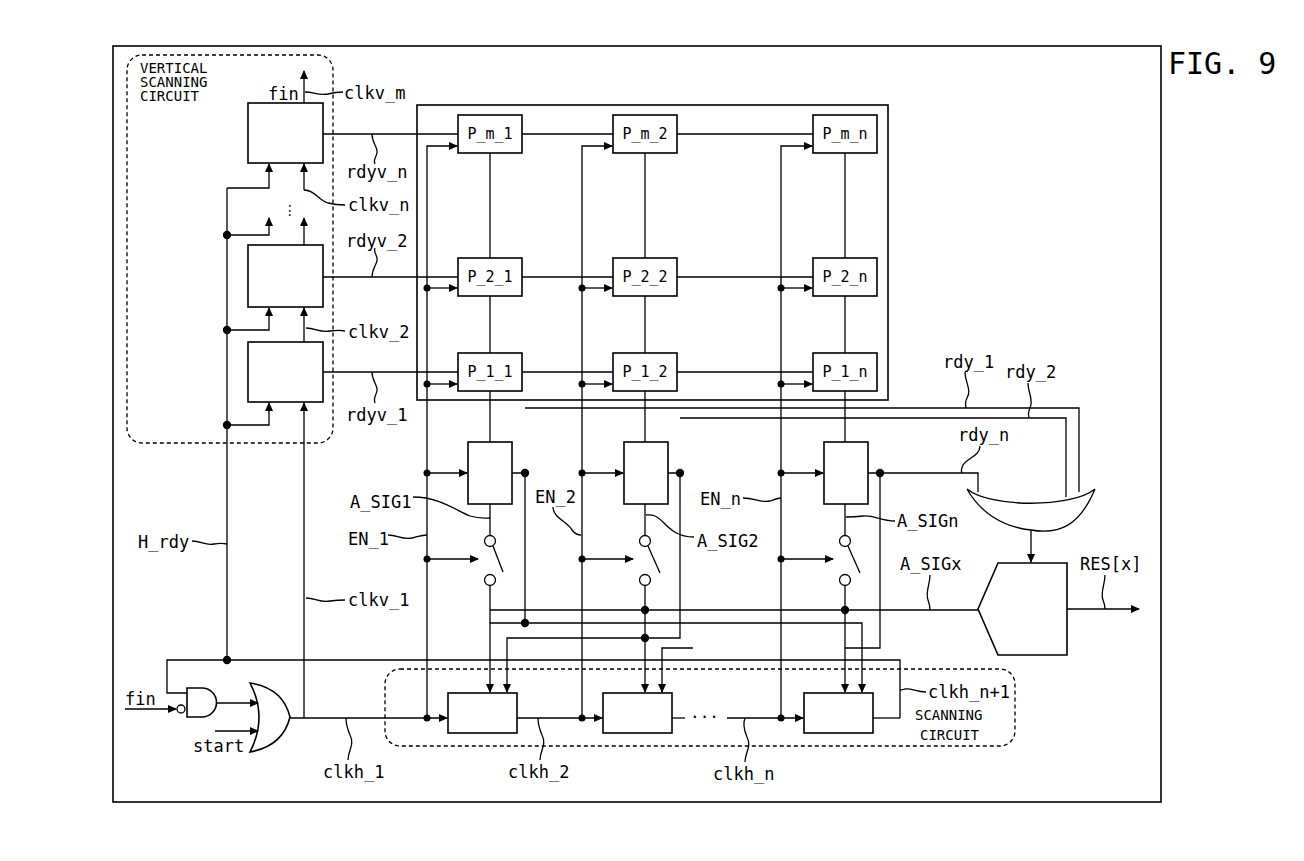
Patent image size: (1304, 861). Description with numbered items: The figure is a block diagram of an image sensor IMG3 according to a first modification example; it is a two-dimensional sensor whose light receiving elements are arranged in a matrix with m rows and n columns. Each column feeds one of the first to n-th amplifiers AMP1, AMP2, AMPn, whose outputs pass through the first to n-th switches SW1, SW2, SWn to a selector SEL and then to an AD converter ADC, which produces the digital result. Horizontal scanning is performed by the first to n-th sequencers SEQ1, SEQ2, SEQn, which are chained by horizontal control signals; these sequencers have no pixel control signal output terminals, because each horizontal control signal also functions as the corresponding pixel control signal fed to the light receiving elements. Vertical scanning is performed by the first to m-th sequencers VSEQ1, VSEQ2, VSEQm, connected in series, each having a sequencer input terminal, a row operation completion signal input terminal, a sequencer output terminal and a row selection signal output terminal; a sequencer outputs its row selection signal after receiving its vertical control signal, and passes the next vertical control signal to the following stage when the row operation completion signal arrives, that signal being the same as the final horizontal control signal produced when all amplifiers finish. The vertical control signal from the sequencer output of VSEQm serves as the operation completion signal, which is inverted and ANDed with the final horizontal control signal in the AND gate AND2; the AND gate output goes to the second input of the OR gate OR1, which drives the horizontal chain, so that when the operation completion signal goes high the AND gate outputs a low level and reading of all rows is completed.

The image sensor IMG3 is at (1162, 160).
The m-th sequencer VSEQm is at (248, 134).
The second sequencer VSEQ2 is at (248, 278).
The first sequencer VSEQ1 is at (248, 373).
The first amplifier AMP1 is at (468, 462).
The second amplifier AMP2 is at (668, 460).
The n-th amplifier AMPn is at (868, 460).
The first switch SW1 is at (487, 582).
The second switch SW2 is at (651, 580).
The n-th switch SWn is at (840, 580).
The selector SEL is at (1078, 520).
The AD converter ADC is at (1047, 655).
The first sequencer SEQ1 is at (462, 733).
The second sequencer SEQ2 is at (637, 733).
The n-th sequencer SEQn is at (839, 733).
The AND gate AND2 is at (198, 717).
The OR gate OR1 is at (267, 750).